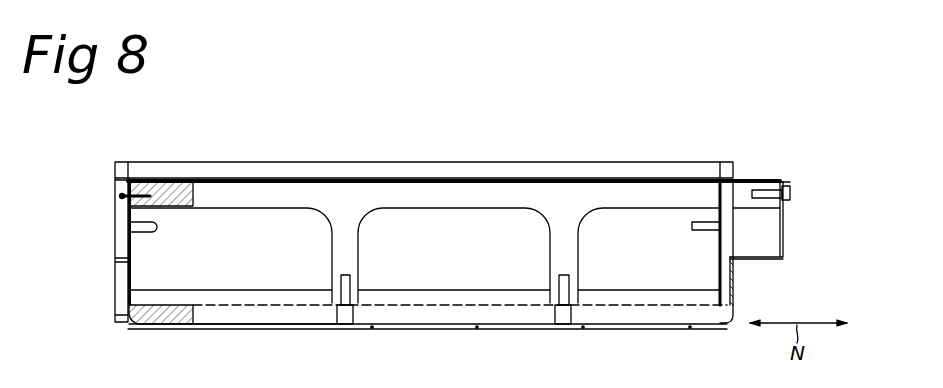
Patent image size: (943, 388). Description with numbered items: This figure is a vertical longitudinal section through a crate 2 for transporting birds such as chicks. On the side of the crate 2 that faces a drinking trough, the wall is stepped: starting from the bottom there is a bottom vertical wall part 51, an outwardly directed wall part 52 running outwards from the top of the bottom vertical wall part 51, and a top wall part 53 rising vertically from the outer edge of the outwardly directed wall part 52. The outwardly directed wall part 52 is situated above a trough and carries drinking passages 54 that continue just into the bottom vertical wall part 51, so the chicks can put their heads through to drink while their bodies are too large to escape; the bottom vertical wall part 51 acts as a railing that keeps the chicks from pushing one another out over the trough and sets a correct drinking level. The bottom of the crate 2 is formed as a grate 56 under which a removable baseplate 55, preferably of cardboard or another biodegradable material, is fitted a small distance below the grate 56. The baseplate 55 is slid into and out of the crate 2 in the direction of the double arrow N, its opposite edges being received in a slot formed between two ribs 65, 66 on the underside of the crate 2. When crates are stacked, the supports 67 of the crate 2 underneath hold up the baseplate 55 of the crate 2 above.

The crate 2 is at (621, 146).
The bottom vertical wall part 51 is at (720, 318).
The outwardly directed wall part 52 is at (783, 260).
The top wall part 53 is at (783, 224).
The drinking passages 54 is at (738, 256).
The baseplate 55 is at (242, 325).
The grate 56 is at (485, 305).
The rib 65 is at (347, 325).
The rib 66 is at (265, 325).
The supports 67 is at (332, 200).